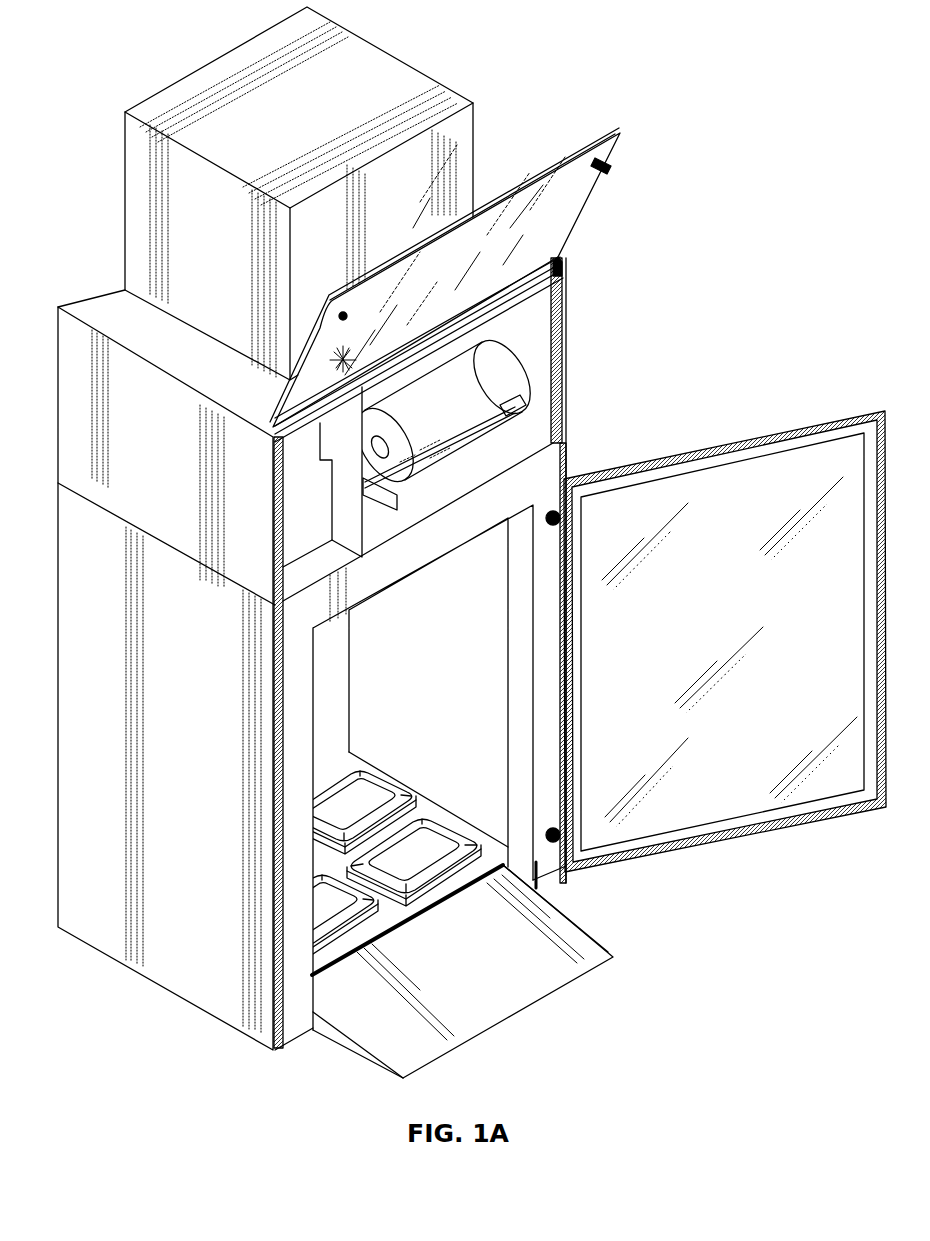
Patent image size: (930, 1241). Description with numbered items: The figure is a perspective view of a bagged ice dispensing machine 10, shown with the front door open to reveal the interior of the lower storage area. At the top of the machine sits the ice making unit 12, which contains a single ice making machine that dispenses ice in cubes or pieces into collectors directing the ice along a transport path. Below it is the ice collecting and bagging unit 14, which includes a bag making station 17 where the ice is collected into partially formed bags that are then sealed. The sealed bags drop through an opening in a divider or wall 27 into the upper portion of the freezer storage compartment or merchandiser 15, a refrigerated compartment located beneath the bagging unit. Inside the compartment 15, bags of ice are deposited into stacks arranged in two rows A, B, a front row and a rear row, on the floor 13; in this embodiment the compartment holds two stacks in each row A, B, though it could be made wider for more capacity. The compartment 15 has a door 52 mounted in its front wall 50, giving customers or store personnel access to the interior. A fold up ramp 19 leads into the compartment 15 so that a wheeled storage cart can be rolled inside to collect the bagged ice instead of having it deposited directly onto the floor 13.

The bagged ice dispensing machine 10 is at (757, 40).
The ice making unit 12 is at (468, 140).
The ice collecting and bagging unit 14 is at (528, 352).
The bag making station 17 is at (500, 406).
The divider or wall 27 is at (556, 461).
The door 52 is at (743, 478).
The freezer storage compartment or merchandiser 15 is at (332, 683).
The floor 13 is at (390, 908).
The front wall 50 is at (306, 985).
The fold up ramp 19 is at (497, 1007).
The front row A is at (437, 820).
The rear row B is at (367, 782).